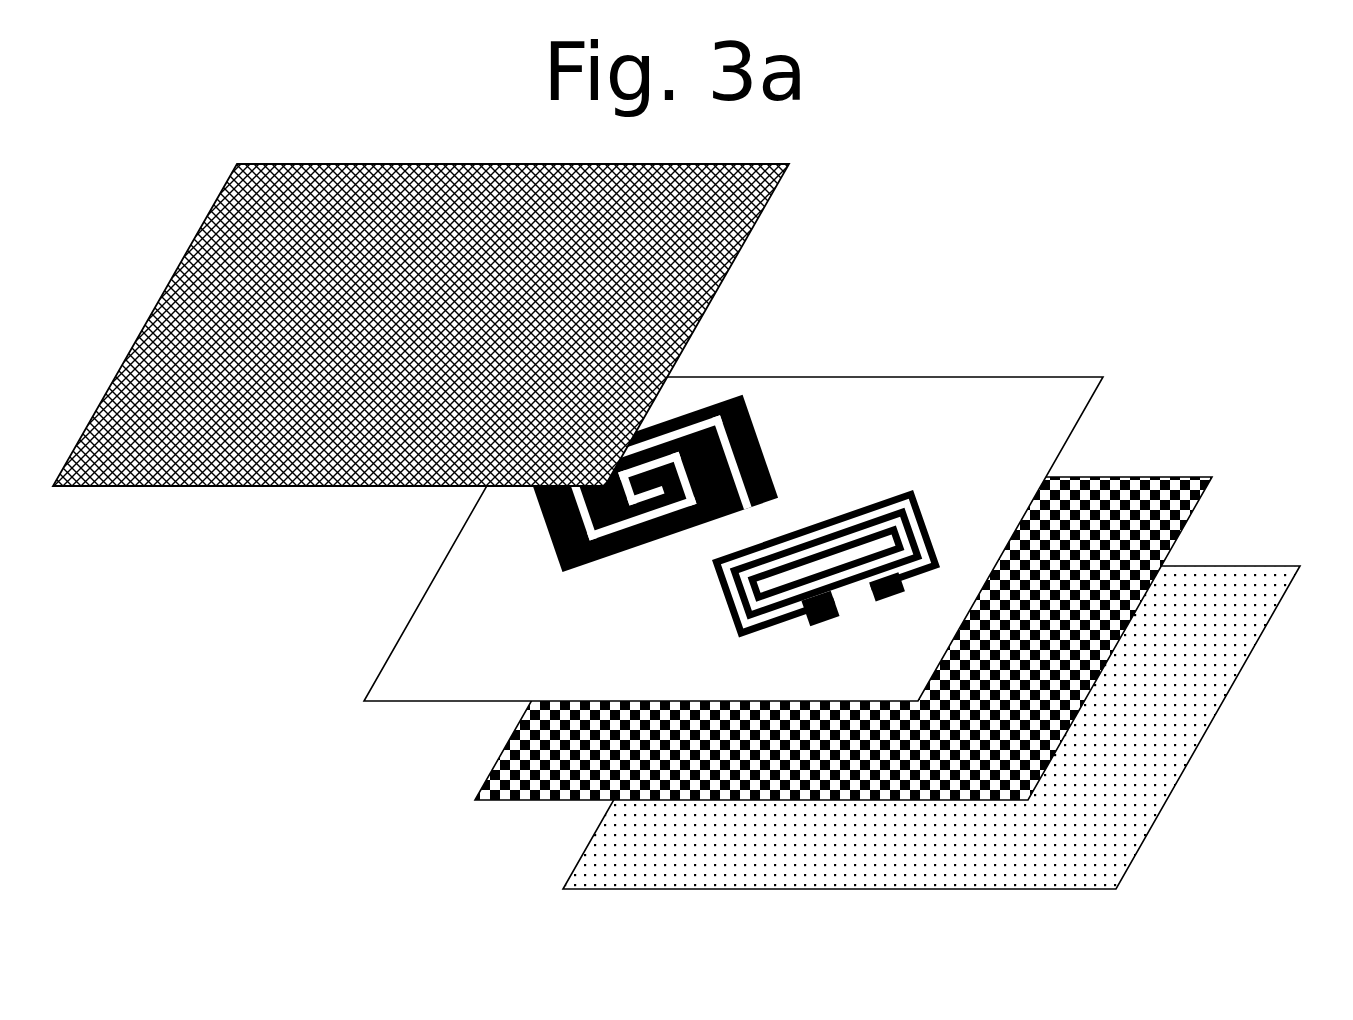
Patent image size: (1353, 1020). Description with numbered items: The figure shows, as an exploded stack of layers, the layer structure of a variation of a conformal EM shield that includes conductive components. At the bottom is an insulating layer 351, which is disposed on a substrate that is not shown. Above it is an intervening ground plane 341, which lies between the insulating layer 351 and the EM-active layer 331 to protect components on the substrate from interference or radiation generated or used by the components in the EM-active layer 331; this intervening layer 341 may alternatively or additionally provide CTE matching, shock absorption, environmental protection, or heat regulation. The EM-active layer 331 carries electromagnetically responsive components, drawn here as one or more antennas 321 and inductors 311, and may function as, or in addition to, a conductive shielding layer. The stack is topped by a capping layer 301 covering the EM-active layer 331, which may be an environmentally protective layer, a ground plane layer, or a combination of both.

The capping layer 301 is at (500, 325).
The inductors 311 is at (688, 450).
The antennas 321 is at (828, 457).
The EM-active layer 331 is at (733, 502).
The intervening ground plane 341 is at (847, 601).
The insulating layer 351 is at (956, 690).